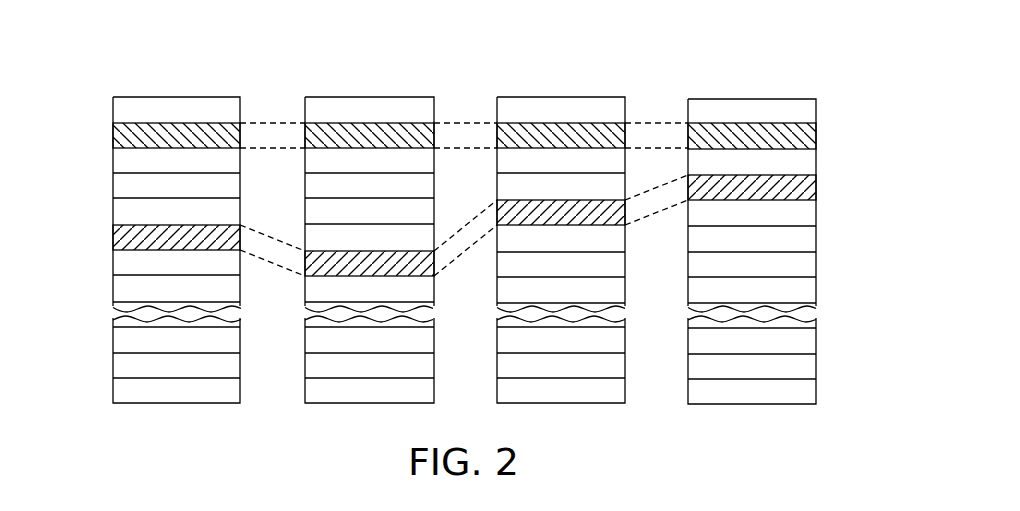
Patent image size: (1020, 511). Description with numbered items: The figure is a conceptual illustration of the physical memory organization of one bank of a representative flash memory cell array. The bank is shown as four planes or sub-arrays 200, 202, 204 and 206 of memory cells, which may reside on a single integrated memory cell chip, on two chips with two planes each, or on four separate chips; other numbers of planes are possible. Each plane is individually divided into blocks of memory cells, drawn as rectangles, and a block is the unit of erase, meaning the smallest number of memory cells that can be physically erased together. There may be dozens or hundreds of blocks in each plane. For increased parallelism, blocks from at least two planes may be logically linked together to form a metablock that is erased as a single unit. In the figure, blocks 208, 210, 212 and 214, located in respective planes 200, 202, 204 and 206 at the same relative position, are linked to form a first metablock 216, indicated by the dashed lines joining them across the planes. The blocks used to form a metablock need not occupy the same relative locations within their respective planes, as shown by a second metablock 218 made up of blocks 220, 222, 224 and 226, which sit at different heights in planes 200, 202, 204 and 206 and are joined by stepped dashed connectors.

The plane 200 is at (178, 87).
The plane 202 is at (375, 84).
The plane 204 is at (557, 84).
The plane 206 is at (791, 96).
The block 208 is at (137, 132).
The block 210 is at (348, 132).
The block 212 is at (543, 132).
The block 214 is at (780, 133).
The first metablock 216 is at (654, 117).
The second metablock 218 is at (660, 180).
The block 220 is at (153, 238).
The block 222 is at (342, 265).
The block 224 is at (548, 210).
The block 226 is at (778, 187).